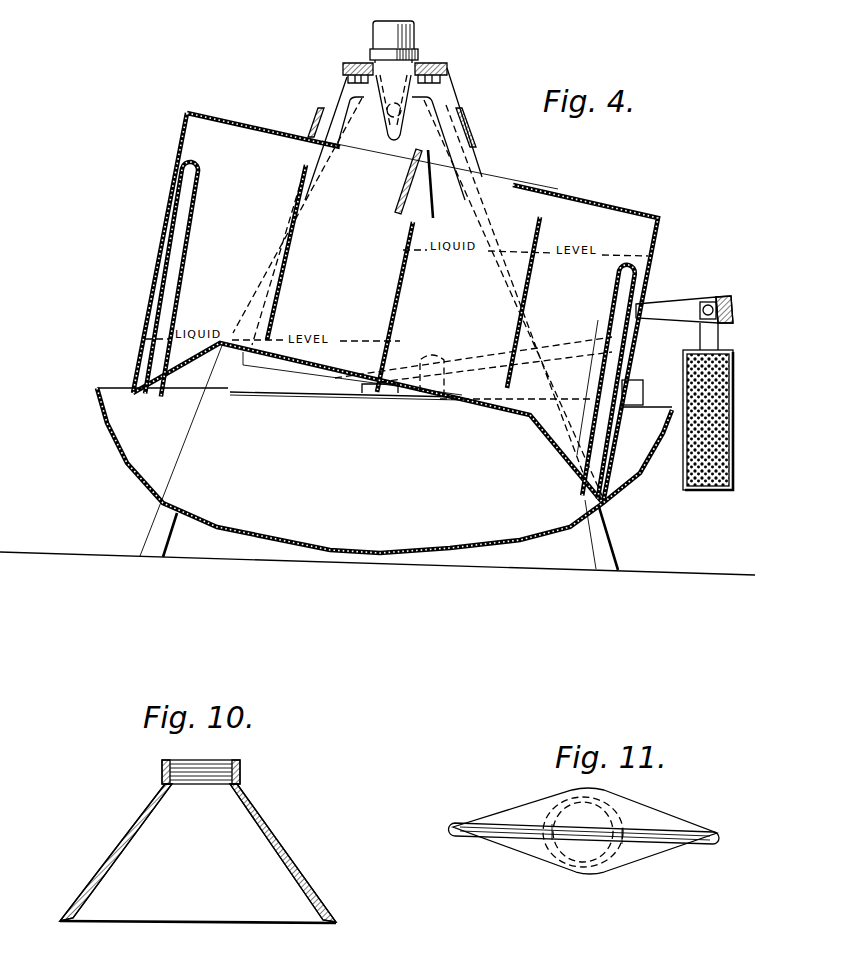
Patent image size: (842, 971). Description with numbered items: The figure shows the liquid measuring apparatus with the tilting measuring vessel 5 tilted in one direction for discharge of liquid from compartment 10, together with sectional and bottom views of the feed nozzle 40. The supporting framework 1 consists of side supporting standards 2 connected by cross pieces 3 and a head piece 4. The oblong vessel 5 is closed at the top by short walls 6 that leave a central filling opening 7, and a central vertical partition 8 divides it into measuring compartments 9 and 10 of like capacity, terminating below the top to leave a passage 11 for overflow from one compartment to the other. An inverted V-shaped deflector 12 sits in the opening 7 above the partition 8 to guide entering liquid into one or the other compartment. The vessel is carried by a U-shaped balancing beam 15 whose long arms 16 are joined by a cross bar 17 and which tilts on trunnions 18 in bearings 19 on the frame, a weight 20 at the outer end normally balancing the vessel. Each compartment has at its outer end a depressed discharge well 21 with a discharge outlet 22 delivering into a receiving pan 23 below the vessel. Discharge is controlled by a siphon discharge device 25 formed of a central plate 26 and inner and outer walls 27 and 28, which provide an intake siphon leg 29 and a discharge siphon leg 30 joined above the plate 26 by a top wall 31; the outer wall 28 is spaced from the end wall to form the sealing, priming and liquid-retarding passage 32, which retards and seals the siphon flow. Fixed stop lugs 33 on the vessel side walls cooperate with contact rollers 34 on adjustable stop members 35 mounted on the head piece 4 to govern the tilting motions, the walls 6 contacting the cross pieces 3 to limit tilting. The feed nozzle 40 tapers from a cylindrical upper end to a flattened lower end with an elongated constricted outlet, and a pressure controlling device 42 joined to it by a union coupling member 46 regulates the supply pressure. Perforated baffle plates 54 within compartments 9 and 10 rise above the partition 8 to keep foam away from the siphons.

In FIG. 4, the supporting framework 1 is at (330, 103).
In FIG. 4, the side supporting standards 2 is at (500, 151).
In FIG. 4, the cross pieces 3 is at (317, 118).
In FIG. 4, the head piece 4 is at (432, 66).
In FIG. 4, the tilting measuring vessel 5 is at (213, 130).
In FIG. 4, the short walls 6 is at (285, 135).
In FIG. 4, the central filling opening 7 is at (467, 200).
In FIG. 4, the central vertical partition 8 is at (395, 307).
In FIG. 4, the measuring compartment 9 is at (229, 239).
In FIG. 4, the measuring compartment 10 is at (566, 296).
In FIG. 4, the passage 11 is at (410, 215).
In FIG. 4, the inverted V-shaped deflector 12 is at (410, 184).
In FIG. 4, the balancing beam 15 is at (488, 385).
In FIG. 4, the long arms 16 is at (666, 307).
In FIG. 4, the cross bar 17 is at (722, 303).
In FIG. 4, the trunnions 18 is at (440, 378).
In FIG. 4, the bearings 19 is at (437, 396).
In FIG. 4, the weight 20 is at (712, 492).
In FIG. 4, the discharge well 21 is at (178, 357).
In FIG. 4, the discharge outlet 22 is at (108, 418).
In FIG. 4, the receiving pan 23 is at (378, 557).
In FIG. 4, the siphon discharge device 25 is at (157, 252).
In FIG. 4, the central plate 26 is at (167, 287).
In FIG. 4, the inner wall 27 is at (170, 312).
In FIG. 4, the outer wall 28 is at (157, 308).
In FIG. 4, the intake siphon leg 29 is at (190, 220).
In FIG. 4, the discharge siphon leg 30 is at (172, 215).
In FIG. 4, the top wall 31 is at (198, 167).
In FIG. 4, the sealing, priming and liquid-retarding passage 32 is at (133, 353).
In FIG. 4, the fixed stop lugs 33 is at (427, 152).
In FIG. 4, the contact rollers 34 is at (447, 93).
In FIG. 4, the adjustable stop members 35 is at (345, 72).
In FIG. 4, the feed nozzle 40 is at (388, 139).
In FIG. 10, the feed nozzle 40 is at (293, 860).
In FIG. 11, the feed nozzle 40 is at (642, 843).
In FIG. 4, the pressure controlling device 42 is at (372, 35).
In FIG. 4, the union coupling member 46 is at (420, 50).
In FIG. 4, the perforated baffle plates 54 is at (285, 268).